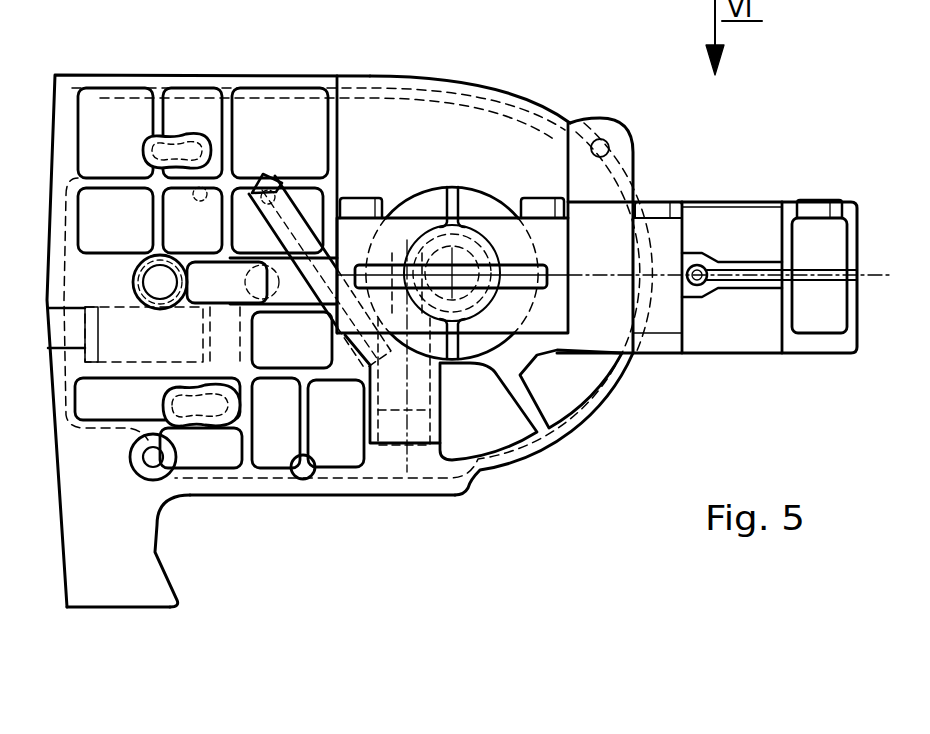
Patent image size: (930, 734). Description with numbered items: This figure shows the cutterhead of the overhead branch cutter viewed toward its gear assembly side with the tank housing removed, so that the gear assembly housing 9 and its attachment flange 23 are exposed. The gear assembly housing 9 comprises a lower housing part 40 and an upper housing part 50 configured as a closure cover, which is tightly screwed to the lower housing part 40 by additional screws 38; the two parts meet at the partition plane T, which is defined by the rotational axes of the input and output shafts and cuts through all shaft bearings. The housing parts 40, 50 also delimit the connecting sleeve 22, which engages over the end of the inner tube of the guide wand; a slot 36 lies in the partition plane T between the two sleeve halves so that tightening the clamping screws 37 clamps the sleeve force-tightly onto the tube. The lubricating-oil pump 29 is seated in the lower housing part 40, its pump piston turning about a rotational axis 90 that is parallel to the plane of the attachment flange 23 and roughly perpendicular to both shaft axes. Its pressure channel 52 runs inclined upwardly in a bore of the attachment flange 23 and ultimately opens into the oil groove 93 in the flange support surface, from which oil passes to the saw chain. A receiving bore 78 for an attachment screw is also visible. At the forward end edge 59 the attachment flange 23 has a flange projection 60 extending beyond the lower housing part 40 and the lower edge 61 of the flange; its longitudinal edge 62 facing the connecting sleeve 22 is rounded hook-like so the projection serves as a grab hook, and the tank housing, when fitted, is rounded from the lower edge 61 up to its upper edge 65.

The forward end edge 59 is at (53, 112).
The attachment flange 23 is at (114, 140).
The upper edge of the tank housing 65 is at (218, 76).
The pressure channel 52 is at (307, 178).
The gear assembly housing 9 is at (466, 174).
The receiving bore 78 is at (603, 140).
The screws 38 is at (367, 206).
The upper housing part 50 is at (754, 220).
The clamping screws 37 is at (830, 213).
The oil groove 93 is at (209, 195).
The lower housing part 40 is at (612, 366).
The partition plane T is at (668, 286).
The connecting sleeve 22 is at (770, 340).
The slot 36 is at (820, 282).
The lubricating-oil pump 29 is at (384, 398).
The lower edge of the attachment flange 61 is at (387, 496).
The rotational axis of the pump piston 90 is at (407, 472).
The longitudinal edge 62 is at (165, 548).
The flange projection 60 is at (108, 585).